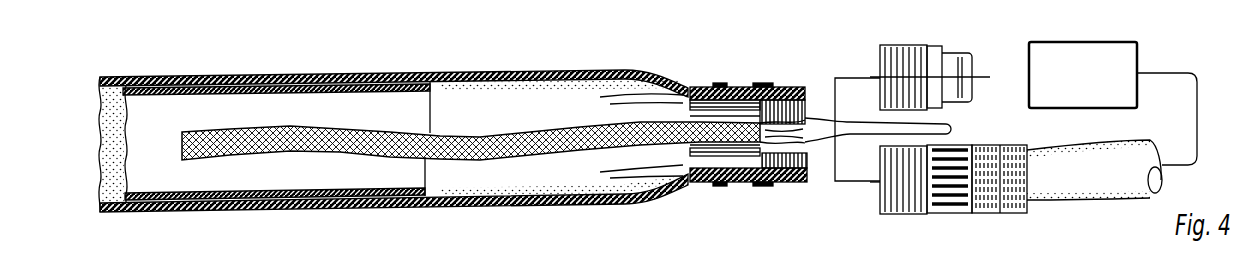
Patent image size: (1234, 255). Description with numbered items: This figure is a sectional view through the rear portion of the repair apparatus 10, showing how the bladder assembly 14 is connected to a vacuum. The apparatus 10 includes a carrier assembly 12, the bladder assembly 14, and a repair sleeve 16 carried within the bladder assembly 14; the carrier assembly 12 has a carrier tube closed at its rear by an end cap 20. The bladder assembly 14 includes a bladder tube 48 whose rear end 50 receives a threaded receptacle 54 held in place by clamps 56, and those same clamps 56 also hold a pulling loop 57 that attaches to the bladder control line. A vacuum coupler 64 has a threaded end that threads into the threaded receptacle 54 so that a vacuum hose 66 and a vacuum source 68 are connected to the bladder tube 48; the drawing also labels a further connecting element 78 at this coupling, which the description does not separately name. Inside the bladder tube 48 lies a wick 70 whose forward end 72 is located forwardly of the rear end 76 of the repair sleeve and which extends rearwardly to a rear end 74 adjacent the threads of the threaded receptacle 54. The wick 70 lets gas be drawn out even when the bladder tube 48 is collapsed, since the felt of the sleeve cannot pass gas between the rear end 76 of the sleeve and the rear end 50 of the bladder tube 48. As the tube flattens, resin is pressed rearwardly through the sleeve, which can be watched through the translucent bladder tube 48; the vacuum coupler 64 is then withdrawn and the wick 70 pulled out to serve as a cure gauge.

The repair apparatus 10 is at (405, 249).
The carrier assembly 12 is at (635, 249).
The bladder assembly 14 is at (525, 136).
The repair sleeve 16 is at (300, 97).
The end cap 20 is at (320, 251).
The bladder tube 48 is at (270, 78).
The rear end 50 is at (787, 183).
The threaded receptacle 54 is at (713, 84).
The clamps 56 is at (805, 96).
The pulling loop 57 is at (853, 136).
The vacuum coupler 64 is at (950, 213).
The vacuum hose 66 is at (1037, 193).
The vacuum source 68 is at (1044, 44).
The wick 70 is at (573, 66).
The forward end 72 is at (187, 132).
The rear end 74 is at (762, 186).
The rear end 76 is at (358, 76).
The nipple 78 is at (958, 55).